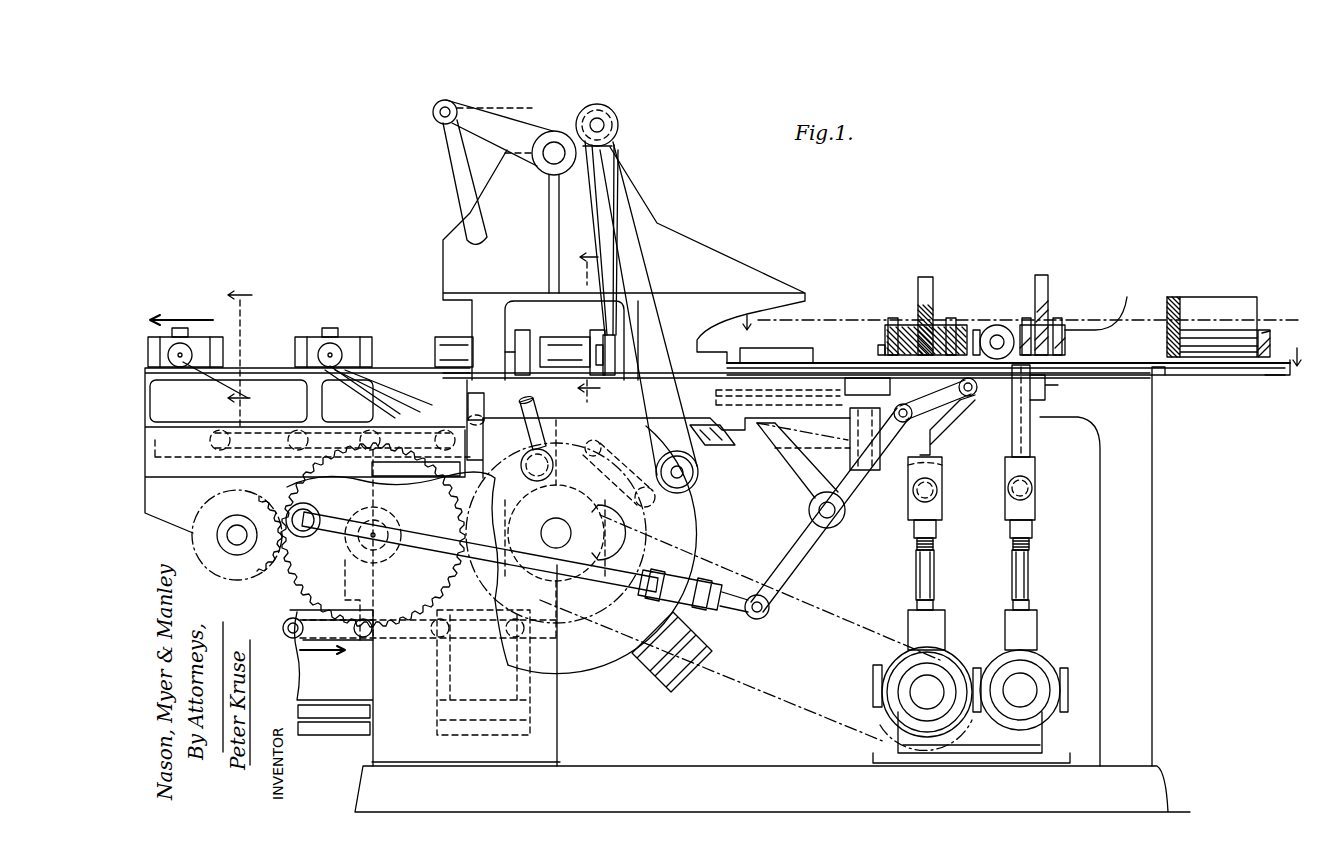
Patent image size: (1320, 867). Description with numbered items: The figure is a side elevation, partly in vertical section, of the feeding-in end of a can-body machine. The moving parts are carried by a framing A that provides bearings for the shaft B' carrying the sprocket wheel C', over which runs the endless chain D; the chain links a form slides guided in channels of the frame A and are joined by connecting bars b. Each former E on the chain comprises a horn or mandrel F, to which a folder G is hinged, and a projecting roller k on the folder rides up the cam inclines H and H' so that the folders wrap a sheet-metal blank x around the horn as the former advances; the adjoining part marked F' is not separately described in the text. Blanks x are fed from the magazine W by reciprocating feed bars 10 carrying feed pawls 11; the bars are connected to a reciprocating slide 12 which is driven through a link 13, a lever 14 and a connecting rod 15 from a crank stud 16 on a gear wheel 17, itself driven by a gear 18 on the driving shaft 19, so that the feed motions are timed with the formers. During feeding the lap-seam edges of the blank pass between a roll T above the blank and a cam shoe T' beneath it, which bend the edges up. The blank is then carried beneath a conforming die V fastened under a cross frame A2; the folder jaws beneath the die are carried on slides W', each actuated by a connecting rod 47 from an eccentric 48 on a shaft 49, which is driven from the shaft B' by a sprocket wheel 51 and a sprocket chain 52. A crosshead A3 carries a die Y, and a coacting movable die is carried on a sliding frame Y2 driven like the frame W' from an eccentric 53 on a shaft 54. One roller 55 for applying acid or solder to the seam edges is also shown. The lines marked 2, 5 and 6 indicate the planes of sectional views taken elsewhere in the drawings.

The section line 2- 2 is at (1019, 339).
The section line 5- 5 is at (588, 322).
The section line 6- 6 is at (240, 347).
The feed bars 10 is at (1163, 368).
The feed pawls 11 is at (862, 362).
The reciprocating slide 12 is at (850, 400).
The link 13 is at (938, 416).
The lever 14 is at (790, 580).
The connecting rod 15 is at (428, 548).
The crank stud 16 is at (305, 518).
The gear wheel 17 is at (373, 541).
The gear 18 is at (260, 570).
The driving shaft 19 is at (237, 535).
The connecting rod 47 is at (935, 590).
The eccentric 48 is at (945, 650).
The shaft 49 is at (910, 688).
The sprocket wheel 51 is at (880, 722).
The sprocket chain 52 is at (735, 676).
The eccentric 53 is at (1042, 662).
The shaft 54 is at (1030, 700).
The roller 55 is at (570, 345).
The framing A is at (370, 678).
The cross frame A2 is at (918, 300).
The crosshead A3 is at (1045, 312).
The shaft B' is at (581, 547).
The sprocket wheel C' is at (505, 626).
The endless chain D is at (295, 628).
The former E is at (260, 339).
The horn F is at (656, 434).
The pulley block F' is at (465, 334).
The folder G is at (437, 353).
The cam incline H is at (383, 388).
The cam incline H' is at (362, 395).
The roll T is at (997, 322).
The cam shoe T' is at (966, 321).
The conforming die V is at (880, 352).
The magazine W is at (1167, 315).
The slides W' is at (875, 470).
The die Y is at (1050, 378).
The sliding frame Y2 is at (1035, 475).
The chain links a is at (310, 445).
The links b is at (415, 632).
The anti-friction rollers k is at (368, 421).
The sheet-metal blank x is at (1085, 345).